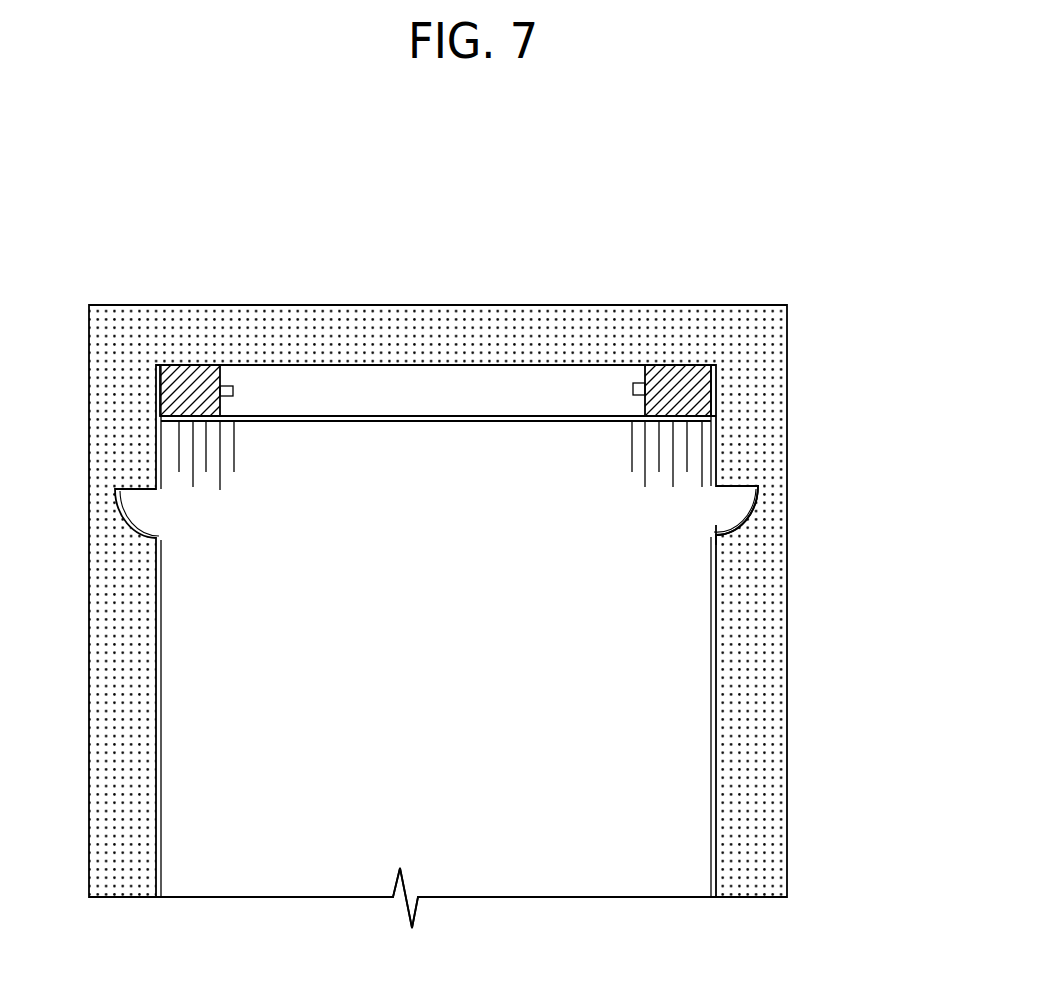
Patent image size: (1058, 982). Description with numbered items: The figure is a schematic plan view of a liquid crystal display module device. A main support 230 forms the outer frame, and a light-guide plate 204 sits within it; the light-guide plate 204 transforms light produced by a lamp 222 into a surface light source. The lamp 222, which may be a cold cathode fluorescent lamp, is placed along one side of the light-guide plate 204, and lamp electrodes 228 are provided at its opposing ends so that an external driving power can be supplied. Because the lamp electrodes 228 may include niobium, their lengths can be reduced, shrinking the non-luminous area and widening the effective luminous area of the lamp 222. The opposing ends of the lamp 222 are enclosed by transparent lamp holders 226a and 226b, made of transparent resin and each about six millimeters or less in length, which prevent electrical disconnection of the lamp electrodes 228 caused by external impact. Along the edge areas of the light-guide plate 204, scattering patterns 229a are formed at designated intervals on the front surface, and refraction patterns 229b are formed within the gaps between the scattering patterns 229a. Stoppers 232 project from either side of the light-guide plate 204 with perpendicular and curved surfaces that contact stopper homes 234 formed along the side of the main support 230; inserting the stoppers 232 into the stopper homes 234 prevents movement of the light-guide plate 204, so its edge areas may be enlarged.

The light-guide plate 204 is at (327, 891).
The lamp 222 is at (481, 382).
The transparent lamp holder 226a is at (188, 366).
The transparent lamp holder 226b is at (697, 365).
The lamp electrode 228 is at (640, 385).
The scattering pattern 229a is at (688, 449).
The refraction pattern 229b is at (700, 442).
The main support 230 is at (755, 733).
The stopper 232 is at (753, 510).
The stopper home 234 is at (718, 530).